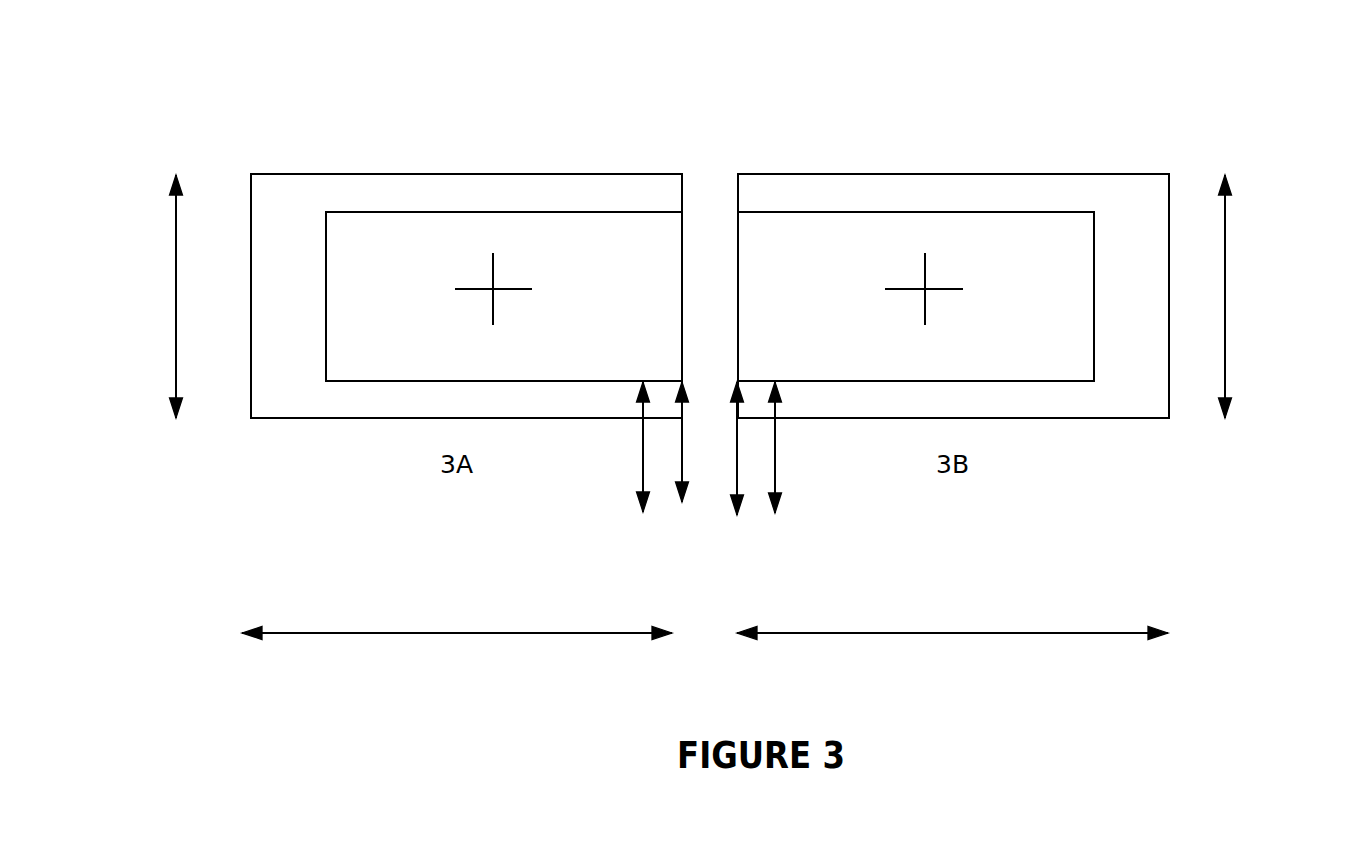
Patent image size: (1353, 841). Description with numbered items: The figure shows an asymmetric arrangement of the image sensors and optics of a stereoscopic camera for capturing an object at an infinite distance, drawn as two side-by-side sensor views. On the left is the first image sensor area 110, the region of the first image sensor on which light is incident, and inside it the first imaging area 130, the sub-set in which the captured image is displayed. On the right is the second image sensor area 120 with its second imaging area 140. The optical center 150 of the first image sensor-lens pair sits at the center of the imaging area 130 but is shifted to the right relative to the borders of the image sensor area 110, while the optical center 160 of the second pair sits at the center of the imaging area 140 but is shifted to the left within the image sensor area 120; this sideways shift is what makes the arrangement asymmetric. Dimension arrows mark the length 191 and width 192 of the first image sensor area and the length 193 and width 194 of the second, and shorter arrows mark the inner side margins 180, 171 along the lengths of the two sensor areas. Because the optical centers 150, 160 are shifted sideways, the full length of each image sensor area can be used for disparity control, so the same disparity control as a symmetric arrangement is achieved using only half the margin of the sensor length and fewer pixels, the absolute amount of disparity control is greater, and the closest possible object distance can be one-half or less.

The first image sensor area 110 is at (597, 173).
The second image sensor area 120 is at (1123, 173).
The first imaging area 130 is at (542, 211).
The second imaging area 140 is at (1067, 210).
The optical center 150 is at (493, 289).
The optical center 160 is at (925, 289).
The inner side margin 171 is at (755, 506).
The inner side margin 180 is at (662, 506).
The length 191 is at (418, 647).
The width 192 is at (157, 272).
The length 193 is at (933, 643).
The width 194 is at (1233, 277).